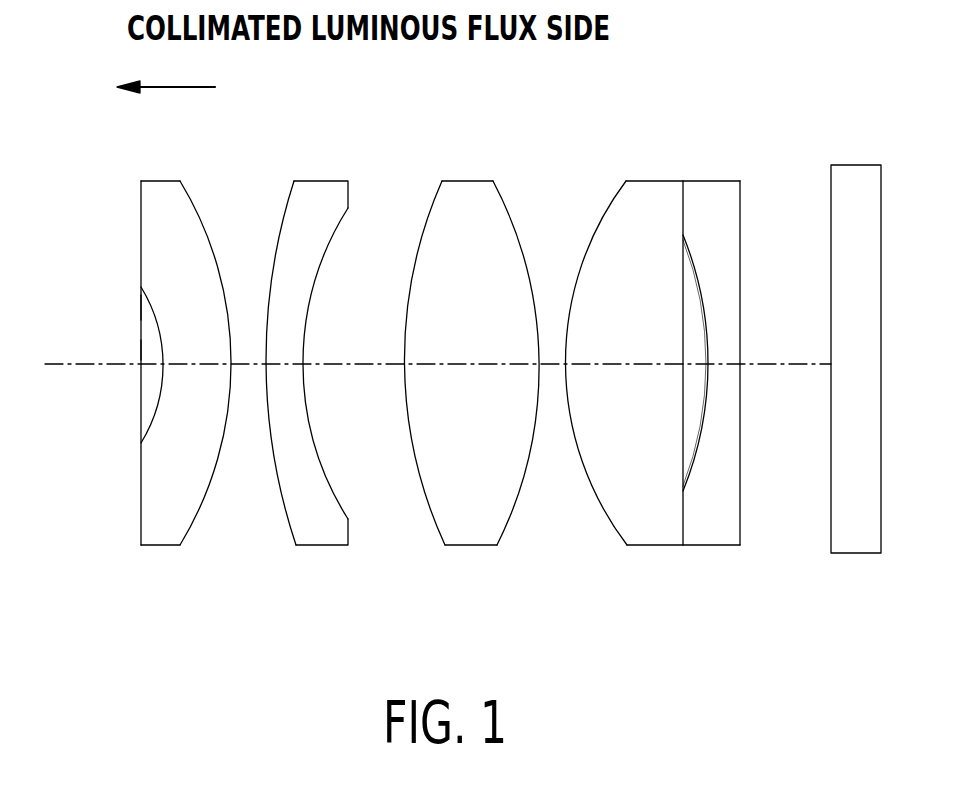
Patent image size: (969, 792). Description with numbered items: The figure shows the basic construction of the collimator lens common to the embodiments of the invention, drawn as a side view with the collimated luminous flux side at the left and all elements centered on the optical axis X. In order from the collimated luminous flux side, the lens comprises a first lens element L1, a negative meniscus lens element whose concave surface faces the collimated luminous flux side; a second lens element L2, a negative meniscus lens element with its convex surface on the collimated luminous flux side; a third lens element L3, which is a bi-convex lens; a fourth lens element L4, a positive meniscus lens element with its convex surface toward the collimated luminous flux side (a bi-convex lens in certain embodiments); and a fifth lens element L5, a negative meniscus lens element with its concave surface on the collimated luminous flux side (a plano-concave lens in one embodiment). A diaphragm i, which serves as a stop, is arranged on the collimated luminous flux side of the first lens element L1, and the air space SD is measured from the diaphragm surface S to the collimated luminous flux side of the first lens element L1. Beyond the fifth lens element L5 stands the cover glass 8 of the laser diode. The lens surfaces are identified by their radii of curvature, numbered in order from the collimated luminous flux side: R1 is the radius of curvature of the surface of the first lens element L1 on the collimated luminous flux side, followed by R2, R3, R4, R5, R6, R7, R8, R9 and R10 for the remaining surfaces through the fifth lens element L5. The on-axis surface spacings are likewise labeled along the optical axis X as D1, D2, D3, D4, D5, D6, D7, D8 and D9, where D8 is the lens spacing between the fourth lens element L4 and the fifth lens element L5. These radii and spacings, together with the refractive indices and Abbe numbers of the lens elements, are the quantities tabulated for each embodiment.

The first lens element L1 is at (170, 337).
The second lens element L2 is at (316, 356).
The third lens element L3 is at (479, 350).
The fourth lens element L4 is at (674, 332).
The fifth lens element L5 is at (725, 341).
The cover glass 8 is at (855, 180).
The optical axis X is at (84, 366).
The diaphragm surface S is at (141, 388).
The air space SD is at (141, 349).
The diaphragm i is at (141, 306).
The radius of curvature R1 is at (141, 441).
The radius of curvature R2 is at (210, 497).
The radius of curvature R3 is at (294, 545).
The radius of curvature R4 is at (336, 492).
The radius of curvature R5 is at (424, 502).
The radius of curvature R6 is at (513, 516).
The radius of curvature R7 is at (598, 477).
The radius of curvature R8 is at (688, 447).
The radius of curvature R9 is at (705, 403).
The radius of curvature R10 is at (742, 504).
The on-axis surface spacing D1 is at (177, 364).
The on-axis surface spacing D2 is at (246, 364).
The on-axis surface spacing D3 is at (285, 364).
The on-axis surface spacing D4 is at (338, 364).
The on-axis surface spacing D5 is at (429, 364).
The on-axis surface spacing D6 is at (565, 364).
The on-axis surface spacing D7 is at (605, 364).
The lens spacing D8 is at (706, 362).
The on-axis surface spacing D9 is at (742, 352).